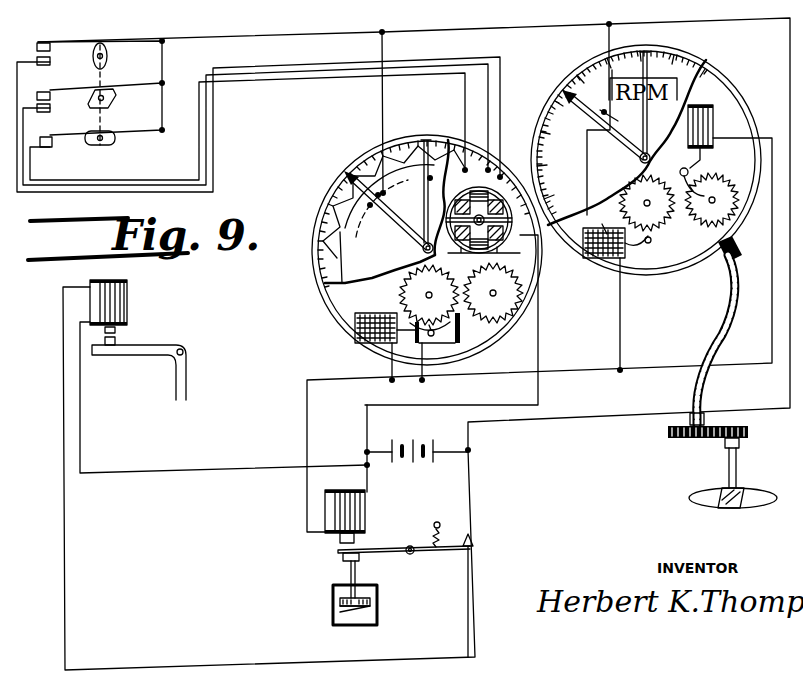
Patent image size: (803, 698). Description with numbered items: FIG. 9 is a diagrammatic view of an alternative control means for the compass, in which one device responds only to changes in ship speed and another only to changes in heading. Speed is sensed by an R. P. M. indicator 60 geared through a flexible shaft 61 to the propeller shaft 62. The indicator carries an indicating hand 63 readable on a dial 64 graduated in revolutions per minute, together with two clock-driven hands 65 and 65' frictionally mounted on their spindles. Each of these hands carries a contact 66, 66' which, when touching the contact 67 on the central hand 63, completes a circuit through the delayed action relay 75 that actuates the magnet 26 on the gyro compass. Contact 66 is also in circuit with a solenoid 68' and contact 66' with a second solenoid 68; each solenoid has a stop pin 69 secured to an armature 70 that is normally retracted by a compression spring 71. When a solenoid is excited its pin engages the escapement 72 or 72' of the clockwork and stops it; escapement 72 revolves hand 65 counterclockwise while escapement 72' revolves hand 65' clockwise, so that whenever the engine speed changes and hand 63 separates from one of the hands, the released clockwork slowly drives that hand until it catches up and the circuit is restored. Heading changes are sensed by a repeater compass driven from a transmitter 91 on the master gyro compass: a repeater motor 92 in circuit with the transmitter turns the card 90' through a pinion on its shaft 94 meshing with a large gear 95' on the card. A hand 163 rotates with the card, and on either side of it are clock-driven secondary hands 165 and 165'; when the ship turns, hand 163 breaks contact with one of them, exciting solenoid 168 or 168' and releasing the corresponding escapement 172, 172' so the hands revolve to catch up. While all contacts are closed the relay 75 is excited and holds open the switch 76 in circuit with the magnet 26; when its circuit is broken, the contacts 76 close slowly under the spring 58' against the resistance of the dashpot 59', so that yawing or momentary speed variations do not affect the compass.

The transmitter 91 is at (107, 57).
The magnet 26 is at (127, 297).
The hand 163 is at (358, 173).
The secondary hand 165 is at (443, 171).
The secondary hand 165' is at (356, 209).
The card 90' is at (363, 211).
The repeater motor 92 is at (512, 215).
The shaft 94 is at (500, 237).
The large gear 95' is at (411, 295).
The solenoid 168 is at (352, 334).
The escapement 172 is at (444, 346).
The escapement 172' is at (524, 295).
The solenoid 168' is at (430, 372).
The R. P. M. indicator 60 is at (657, 160).
The indicating hand 63 is at (578, 80).
The contact 66 is at (624, 61).
The hand 65 is at (664, 88).
The contact 66' is at (604, 125).
The contact 67 is at (622, 120).
The hand 65' is at (613, 154).
The dial 64 is at (706, 62).
The solenoid 68' is at (709, 125).
The stop pin 69 is at (695, 158).
The escapement 72 is at (656, 219).
The escapement 72' is at (712, 200).
The solenoid 68 is at (604, 259).
The compression spring 71 is at (605, 219).
The armature 70 is at (596, 246).
The flexible shaft 61 is at (712, 318).
The propeller shaft 62 is at (740, 460).
The delayed action relay 75 is at (338, 551).
The spring 58' is at (416, 529).
The switch 76 is at (484, 531).
The dashpot 59' is at (374, 599).